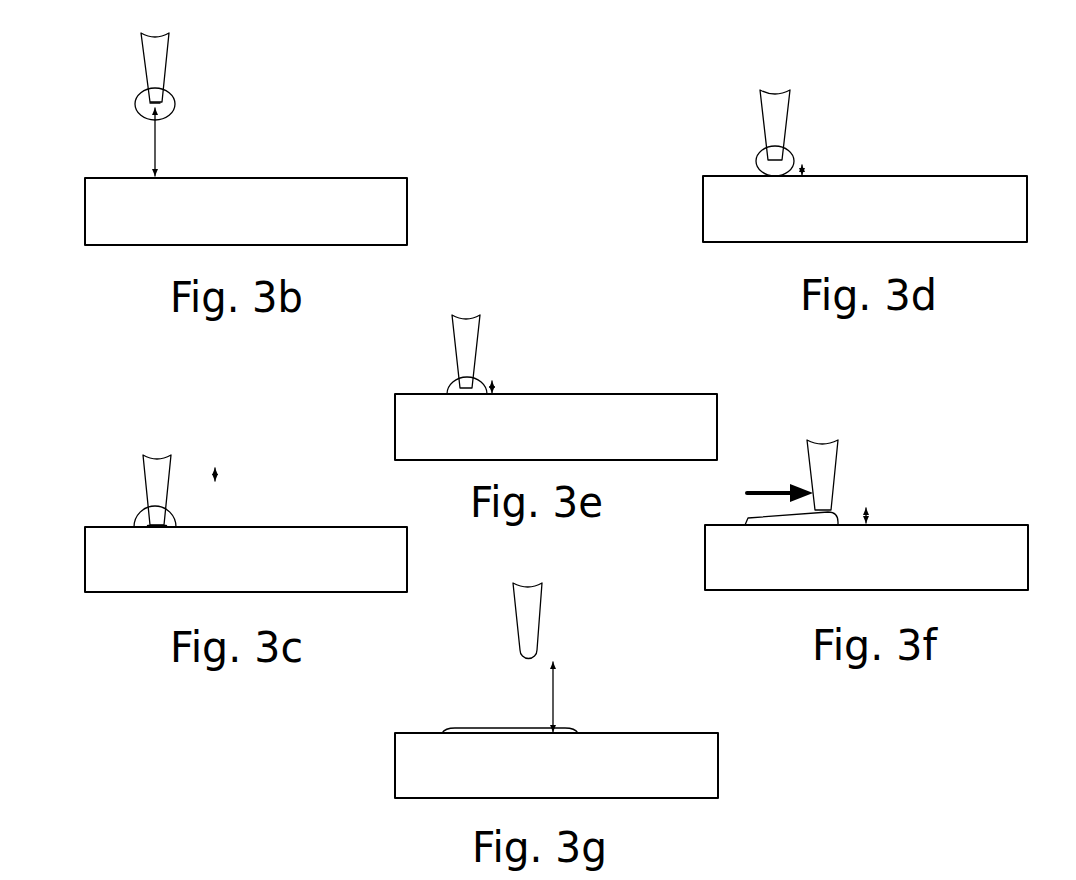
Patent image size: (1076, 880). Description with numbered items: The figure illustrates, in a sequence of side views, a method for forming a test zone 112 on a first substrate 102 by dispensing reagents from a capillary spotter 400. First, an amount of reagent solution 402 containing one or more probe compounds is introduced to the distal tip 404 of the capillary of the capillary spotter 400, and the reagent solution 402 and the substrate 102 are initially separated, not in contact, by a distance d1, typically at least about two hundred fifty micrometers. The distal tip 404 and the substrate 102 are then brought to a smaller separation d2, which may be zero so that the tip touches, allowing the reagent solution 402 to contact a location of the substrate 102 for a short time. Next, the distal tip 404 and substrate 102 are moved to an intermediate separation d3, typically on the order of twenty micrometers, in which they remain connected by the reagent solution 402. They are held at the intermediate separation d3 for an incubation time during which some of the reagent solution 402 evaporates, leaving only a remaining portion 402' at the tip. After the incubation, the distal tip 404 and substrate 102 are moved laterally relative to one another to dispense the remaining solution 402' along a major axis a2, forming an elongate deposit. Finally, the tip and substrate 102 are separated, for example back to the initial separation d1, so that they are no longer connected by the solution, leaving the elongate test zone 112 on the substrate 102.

In FIG. 3B, the first substrate 102 is at (340, 246).
In FIG. 3C, the first substrate 102 is at (340, 593).
In FIG. 3D, the first substrate 102 is at (1007, 243).
In FIG. 3E, the first substrate 102 is at (643, 462).
In FIG. 3F, the first substrate 102 is at (983, 590).
In FIG. 3G, the first substrate 102 is at (643, 798).
In FIG. 3G, the test zone 112 is at (468, 728).
In FIG. 3B, the capillary spotter 400 is at (176, 50).
In FIG. 3D, the capillary spotter 400 is at (792, 105).
In FIG. 3E, the capillary spotter 400 is at (482, 335).
In FIG. 3G, the capillary spotter 400 is at (549, 607).
In FIG. 3B, the reagent solution 402 is at (201, 103).
In FIG. 3C, the reagent solution 402 is at (105, 498).
In FIG. 3D, the reagent solution 402 is at (724, 145).
In FIG. 3E, the remaining portion of reagent solution 402' is at (417, 365).
In FIG. 3F, the remaining portion of reagent solution 402' is at (789, 573).
In FIG. 3B, the distal tip 404 is at (142, 112).
In FIG. 3C, the distal tip 404 is at (142, 530).
In FIG. 3B, the initial separation d1 is at (160, 148).
In FIG. 3G, the initial separation d1 is at (556, 702).
In FIG. 3C, the smaller separation d2 is at (180, 518).
In FIG. 3D, the intermediate separation d3 is at (808, 171).
In FIG. 3E, the intermediate separation d3 is at (498, 387).
In FIG. 3F, the intermediate separation d3 is at (873, 515).
In FIG. 3F, the major axis a2 is at (772, 490).